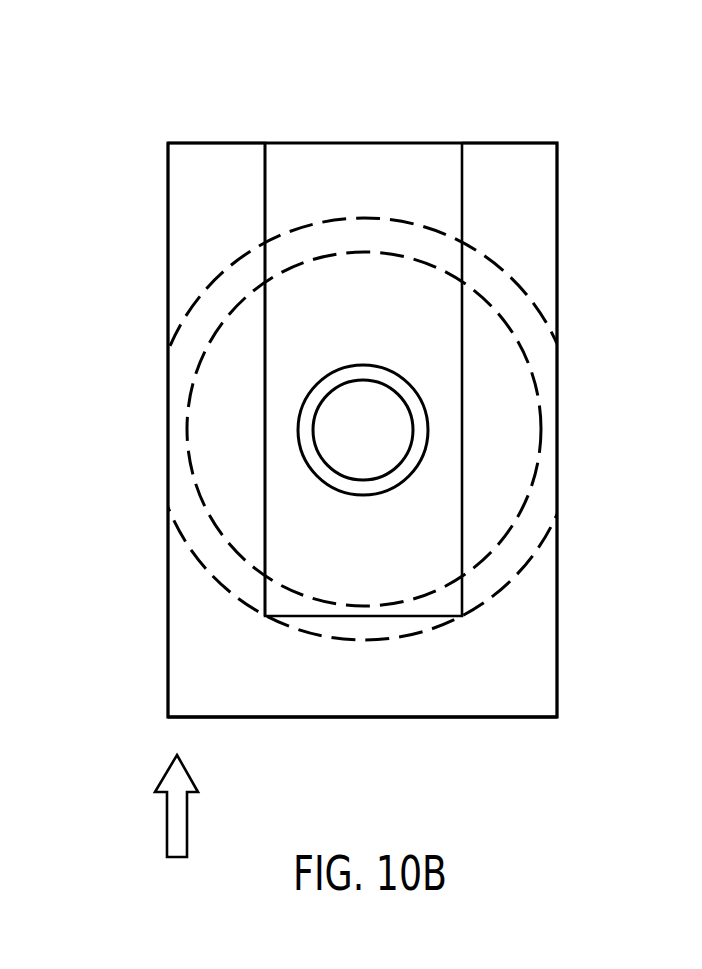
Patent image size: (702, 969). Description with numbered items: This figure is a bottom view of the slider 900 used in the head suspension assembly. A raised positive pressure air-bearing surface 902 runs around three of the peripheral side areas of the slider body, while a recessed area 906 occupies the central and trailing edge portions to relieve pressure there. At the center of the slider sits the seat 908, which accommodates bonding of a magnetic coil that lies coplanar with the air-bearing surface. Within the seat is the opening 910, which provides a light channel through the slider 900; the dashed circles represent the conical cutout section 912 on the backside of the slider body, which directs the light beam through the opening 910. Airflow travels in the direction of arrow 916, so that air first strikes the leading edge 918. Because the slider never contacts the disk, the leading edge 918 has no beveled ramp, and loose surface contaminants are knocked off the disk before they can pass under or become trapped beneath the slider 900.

The slider 900 is at (572, 82).
The raised positive pressure air-bearing surface 902 is at (198, 206).
The recessed area 906 is at (303, 173).
The seat 908 is at (320, 390).
The opening 910 is at (337, 437).
The conical cutout section 912 is at (498, 358).
The arrow 916 is at (178, 812).
The leading edge 918 is at (243, 718).